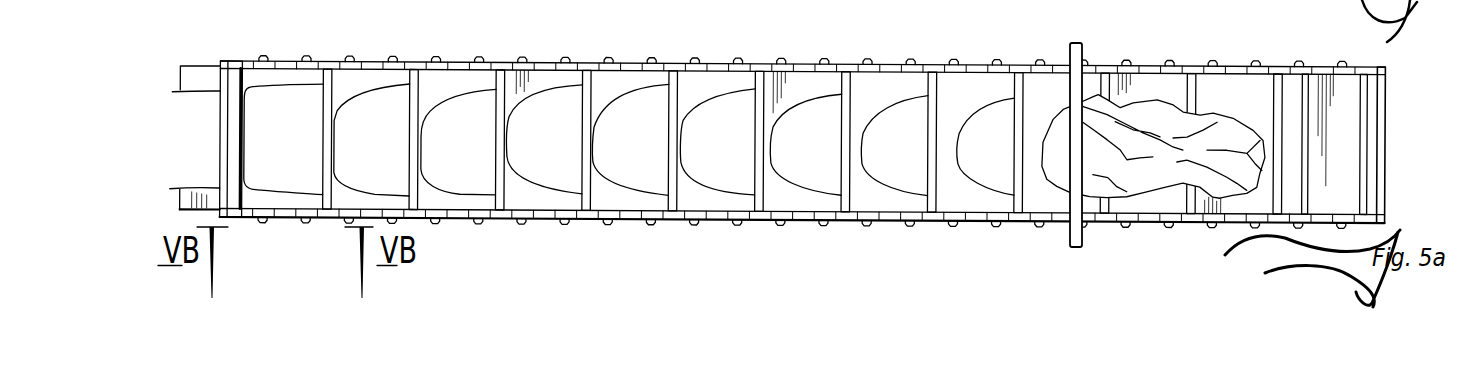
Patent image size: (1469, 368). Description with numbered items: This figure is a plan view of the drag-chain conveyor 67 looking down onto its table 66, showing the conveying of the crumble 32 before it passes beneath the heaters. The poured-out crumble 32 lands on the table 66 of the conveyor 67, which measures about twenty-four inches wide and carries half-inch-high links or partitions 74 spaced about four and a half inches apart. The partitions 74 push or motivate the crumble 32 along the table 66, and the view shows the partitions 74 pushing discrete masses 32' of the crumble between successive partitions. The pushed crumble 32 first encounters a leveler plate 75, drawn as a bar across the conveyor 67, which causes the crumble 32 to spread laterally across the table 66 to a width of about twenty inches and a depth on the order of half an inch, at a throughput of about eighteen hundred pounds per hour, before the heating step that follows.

The crumble 32 is at (1154, 105).
The discrete masses of the crumble 32' is at (458, 105).
The partitions 74 is at (758, 75).
The leveler plate 75 is at (1073, 43).
The drag-chain conveyor 67 is at (1232, 82).
The table 66 is at (1317, 72).